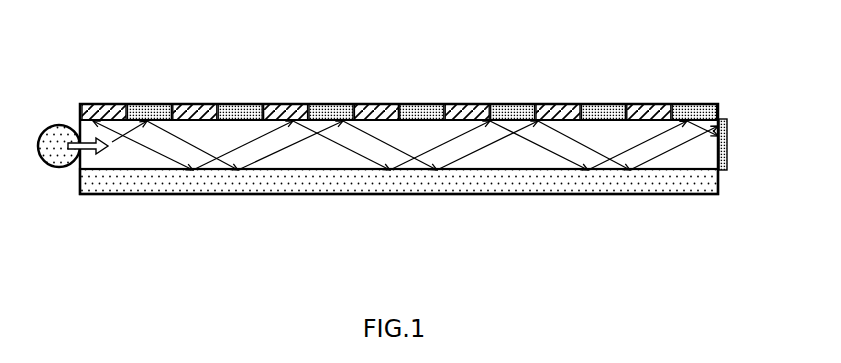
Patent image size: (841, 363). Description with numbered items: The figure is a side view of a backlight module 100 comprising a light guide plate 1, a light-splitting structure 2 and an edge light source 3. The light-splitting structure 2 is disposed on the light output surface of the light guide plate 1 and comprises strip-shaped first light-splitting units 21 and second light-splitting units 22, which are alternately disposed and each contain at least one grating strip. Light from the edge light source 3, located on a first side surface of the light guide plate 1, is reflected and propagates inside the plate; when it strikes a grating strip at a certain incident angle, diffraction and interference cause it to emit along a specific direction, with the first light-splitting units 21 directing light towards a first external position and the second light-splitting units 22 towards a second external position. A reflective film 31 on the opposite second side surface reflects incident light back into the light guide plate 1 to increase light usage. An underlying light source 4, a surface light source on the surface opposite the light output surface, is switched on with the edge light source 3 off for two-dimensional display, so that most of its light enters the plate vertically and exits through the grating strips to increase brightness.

The backlight module 100 is at (42, 90).
The light guide plate 1 is at (130, 157).
The light-splitting structure 2 is at (399, 193).
The first light-splitting units 21 is at (423, 120).
The second light-splitting units 22 is at (469, 120).
The edge light source 3 is at (58, 167).
The reflective film 31 is at (723, 170).
The underlying light source 4 is at (307, 184).